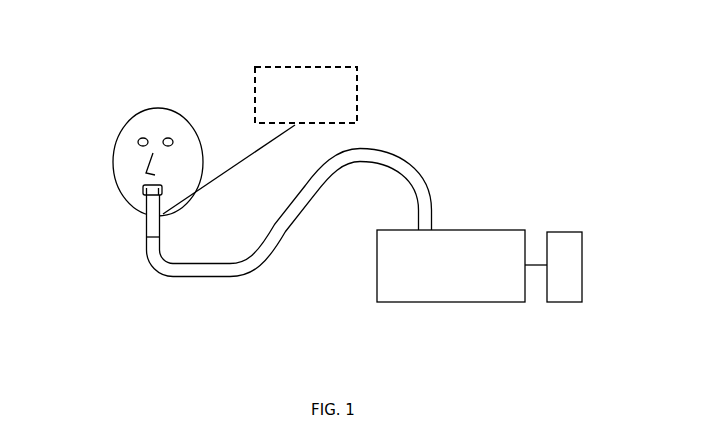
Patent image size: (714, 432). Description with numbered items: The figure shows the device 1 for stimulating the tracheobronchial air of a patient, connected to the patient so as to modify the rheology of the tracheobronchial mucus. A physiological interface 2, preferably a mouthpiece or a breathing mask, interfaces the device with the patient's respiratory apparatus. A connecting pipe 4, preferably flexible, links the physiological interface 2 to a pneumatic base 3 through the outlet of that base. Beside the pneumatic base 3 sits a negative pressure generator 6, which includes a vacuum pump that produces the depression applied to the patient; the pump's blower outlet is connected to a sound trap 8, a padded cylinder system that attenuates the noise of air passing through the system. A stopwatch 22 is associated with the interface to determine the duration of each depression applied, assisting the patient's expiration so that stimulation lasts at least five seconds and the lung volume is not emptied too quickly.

The device 1 is at (450, 108).
The physiological interface 2 is at (111, 213).
The pneumatic base 3 is at (462, 286).
The connecting pipe 4 is at (286, 235).
The negative pressure generator 6 is at (589, 287).
The sound trap 8 is at (127, 156).
The stopwatch 22 is at (330, 65).